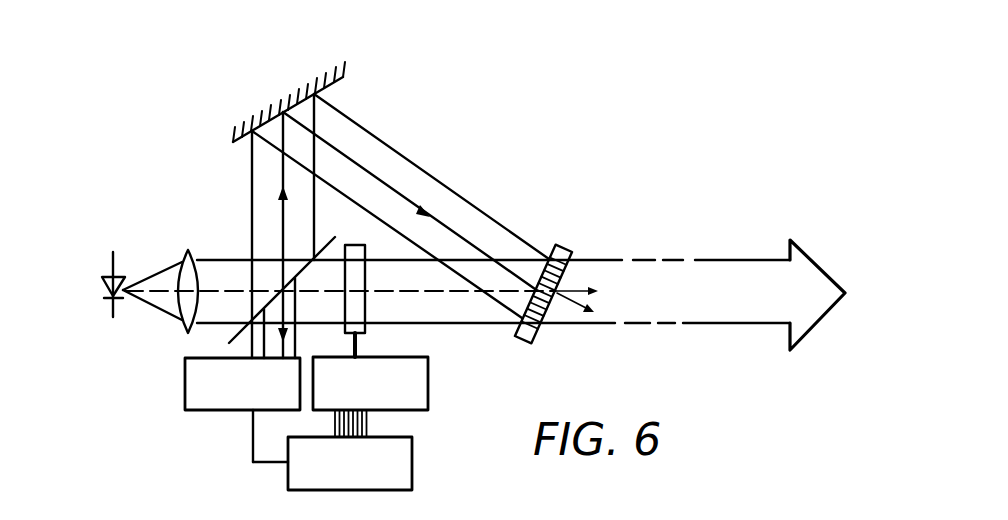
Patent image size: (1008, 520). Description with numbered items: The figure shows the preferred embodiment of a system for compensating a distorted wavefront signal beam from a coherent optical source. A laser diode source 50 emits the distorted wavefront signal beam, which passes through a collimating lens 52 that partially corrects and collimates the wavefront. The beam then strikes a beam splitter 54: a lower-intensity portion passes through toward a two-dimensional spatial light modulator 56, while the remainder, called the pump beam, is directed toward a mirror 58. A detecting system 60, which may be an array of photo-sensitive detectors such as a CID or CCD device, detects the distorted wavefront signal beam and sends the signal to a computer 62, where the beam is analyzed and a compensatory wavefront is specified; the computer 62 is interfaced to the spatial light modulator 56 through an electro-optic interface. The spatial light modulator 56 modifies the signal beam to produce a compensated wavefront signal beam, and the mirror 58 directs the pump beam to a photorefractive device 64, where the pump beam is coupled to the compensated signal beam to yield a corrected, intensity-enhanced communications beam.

The laser diode source 50 is at (100, 283).
The collimating lens 52 is at (186, 250).
The beam splitter 54 is at (321, 237).
The 2-D spatial light modulator 56 is at (365, 305).
The mirror 58 is at (343, 75).
The detecting system 60 is at (185, 382).
The computer 62 is at (412, 458).
The photorefractive device 64 is at (560, 246).